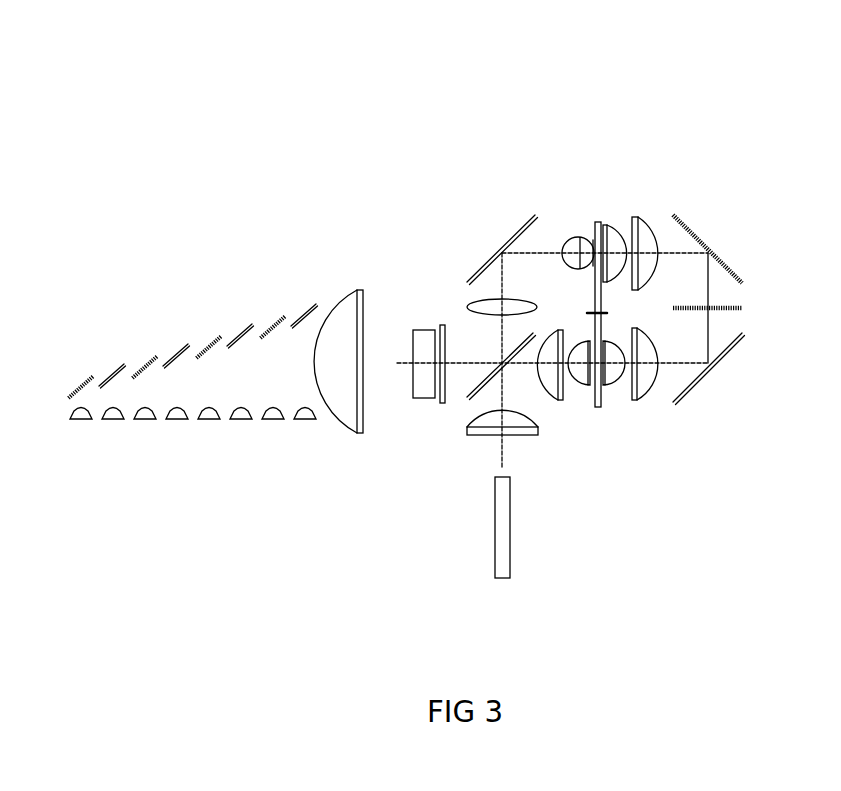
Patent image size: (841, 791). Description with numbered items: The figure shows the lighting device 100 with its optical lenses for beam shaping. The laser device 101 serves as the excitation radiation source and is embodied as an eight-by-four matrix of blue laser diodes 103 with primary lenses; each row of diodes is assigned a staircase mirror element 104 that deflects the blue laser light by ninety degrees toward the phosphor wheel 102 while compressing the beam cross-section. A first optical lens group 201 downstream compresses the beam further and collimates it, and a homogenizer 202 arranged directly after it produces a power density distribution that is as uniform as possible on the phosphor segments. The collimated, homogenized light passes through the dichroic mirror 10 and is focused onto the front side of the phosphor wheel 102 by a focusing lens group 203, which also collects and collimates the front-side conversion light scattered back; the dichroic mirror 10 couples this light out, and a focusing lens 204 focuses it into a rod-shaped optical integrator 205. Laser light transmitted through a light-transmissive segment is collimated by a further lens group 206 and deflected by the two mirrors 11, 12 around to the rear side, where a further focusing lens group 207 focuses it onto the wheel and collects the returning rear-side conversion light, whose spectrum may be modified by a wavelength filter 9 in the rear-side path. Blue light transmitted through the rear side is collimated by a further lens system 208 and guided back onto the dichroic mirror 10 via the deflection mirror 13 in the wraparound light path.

The lighting device 100 is at (428, 92).
The laser device 101 is at (199, 487).
The phosphor wheel 102 is at (597, 410).
The blue laser diodes 103 is at (83, 420).
The staircase mirror element 104 is at (83, 417).
The dichroic mirror 10 is at (467, 395).
The mirror 11 is at (693, 383).
The deflection mirror 12 is at (693, 225).
The deflection mirror 13 is at (517, 233).
The wavelength filter 9 is at (727, 310).
The first optical lens group 201 is at (423, 380).
The homogenizer 202 is at (443, 327).
The focusing lens group 203 is at (580, 377).
The focusing lens 204 is at (477, 437).
The rod-shaped optical integrator 205 is at (502, 578).
The further lens group 206 is at (607, 377).
The further focusing lens group 207 is at (603, 223).
The further lens system 208 is at (483, 305).